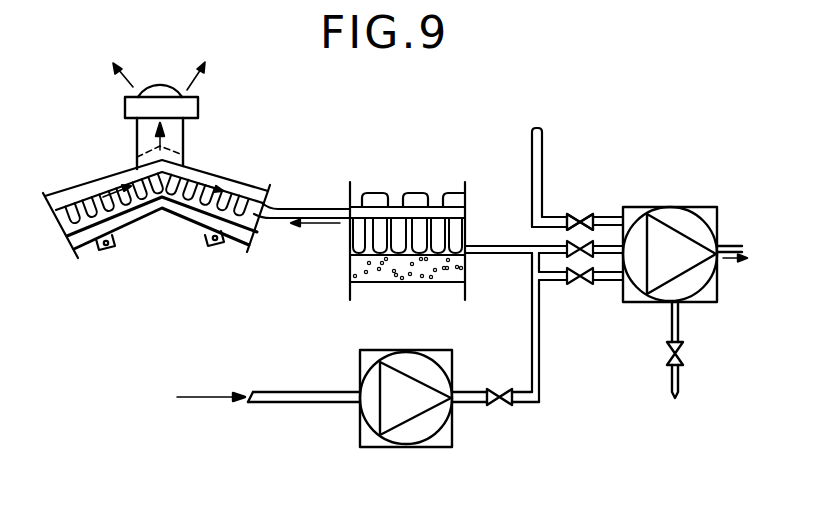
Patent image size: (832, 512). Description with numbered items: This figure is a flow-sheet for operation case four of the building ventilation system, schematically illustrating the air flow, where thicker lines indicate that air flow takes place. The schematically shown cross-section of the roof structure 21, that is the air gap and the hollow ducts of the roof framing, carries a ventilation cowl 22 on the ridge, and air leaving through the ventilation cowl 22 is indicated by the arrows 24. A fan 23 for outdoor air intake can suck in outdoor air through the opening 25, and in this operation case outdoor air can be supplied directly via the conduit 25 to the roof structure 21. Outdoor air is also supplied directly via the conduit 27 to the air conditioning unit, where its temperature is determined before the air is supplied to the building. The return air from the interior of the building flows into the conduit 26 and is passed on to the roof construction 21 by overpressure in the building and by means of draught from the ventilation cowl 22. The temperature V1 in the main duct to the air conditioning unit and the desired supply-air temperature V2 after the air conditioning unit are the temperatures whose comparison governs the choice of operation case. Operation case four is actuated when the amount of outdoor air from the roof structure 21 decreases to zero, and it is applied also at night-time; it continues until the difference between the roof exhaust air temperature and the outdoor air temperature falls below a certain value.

The roof structure 21 is at (386, 187).
The ventilation cowl 22 is at (193, 106).
The fan for outdoor air intake 23 is at (423, 350).
The arrows 24 is at (186, 82).
The opening 25 is at (340, 403).
The conduit 26 is at (672, 323).
The conduit 27 is at (538, 180).
The temperature in the main duct V1 is at (510, 247).
The supply-air temperature V2 is at (735, 244).